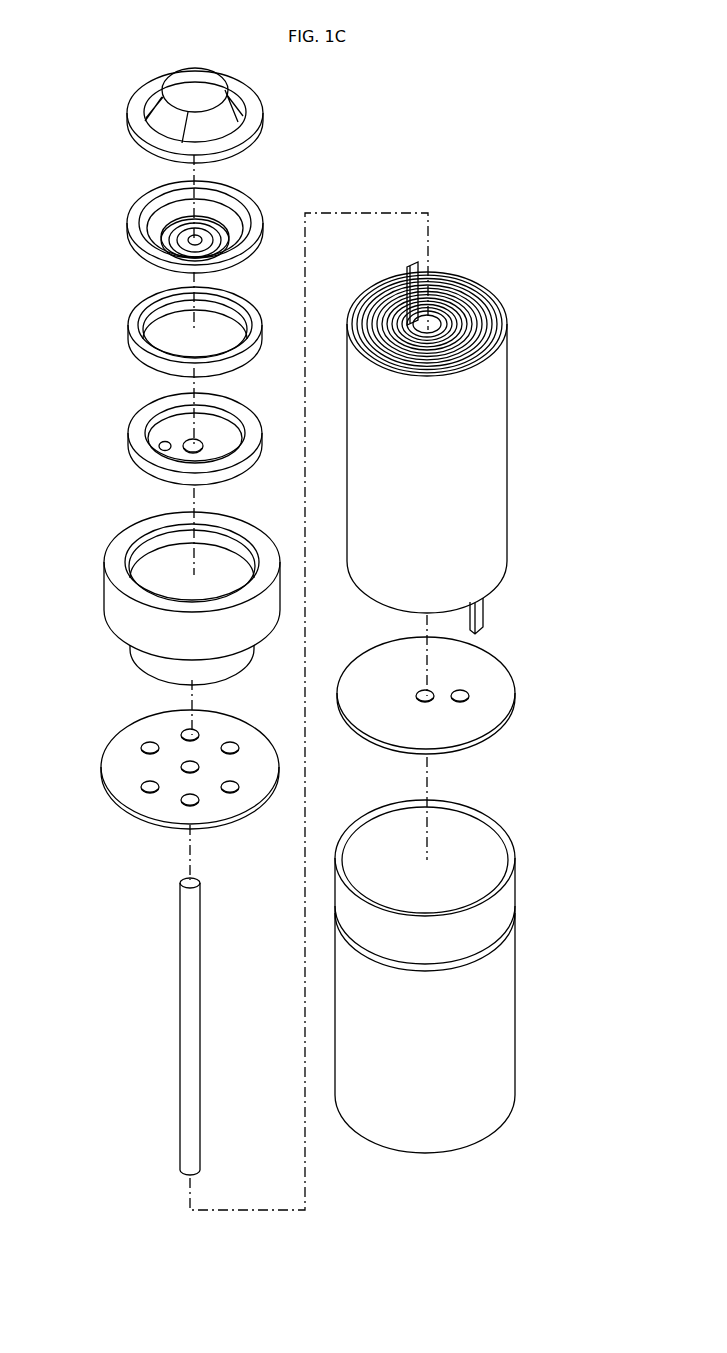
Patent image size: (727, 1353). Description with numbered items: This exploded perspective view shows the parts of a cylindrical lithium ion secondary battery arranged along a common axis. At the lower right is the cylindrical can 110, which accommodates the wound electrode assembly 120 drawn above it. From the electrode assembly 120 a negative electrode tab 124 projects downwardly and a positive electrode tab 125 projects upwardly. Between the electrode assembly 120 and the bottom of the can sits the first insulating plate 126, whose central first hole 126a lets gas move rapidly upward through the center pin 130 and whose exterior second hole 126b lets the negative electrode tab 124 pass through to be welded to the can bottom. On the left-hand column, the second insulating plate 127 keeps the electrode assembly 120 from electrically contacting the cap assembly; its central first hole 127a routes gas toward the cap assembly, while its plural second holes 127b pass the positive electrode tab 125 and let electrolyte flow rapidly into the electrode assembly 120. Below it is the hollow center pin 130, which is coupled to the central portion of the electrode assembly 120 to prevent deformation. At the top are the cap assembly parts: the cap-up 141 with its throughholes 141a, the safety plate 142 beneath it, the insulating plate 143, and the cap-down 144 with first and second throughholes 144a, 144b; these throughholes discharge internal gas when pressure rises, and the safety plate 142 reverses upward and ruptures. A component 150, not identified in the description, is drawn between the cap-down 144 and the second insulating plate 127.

The cylindrical can 110 is at (503, 1010).
The electrode assembly 120 is at (497, 445).
The negative electrode tab 124 is at (480, 612).
The positive electrode tab 125 is at (410, 266).
The first insulating plate 126 is at (492, 722).
The first hole 126a is at (432, 688).
The second hole 126b is at (467, 692).
The second insulating plate 127 is at (113, 760).
The first hole 127a is at (190, 766).
The second holes 127b is at (232, 790).
The center pin 130 is at (185, 1008).
The cap-up 141 is at (128, 109).
The throughholes 141a is at (198, 125).
The safety plate 142 is at (128, 216).
The insulating plate 143 is at (128, 325).
The cap-down 144 is at (142, 448).
The first throughhole 144a is at (188, 443).
The second throughhole 144b is at (163, 443).
The gasket 150 is at (105, 600).